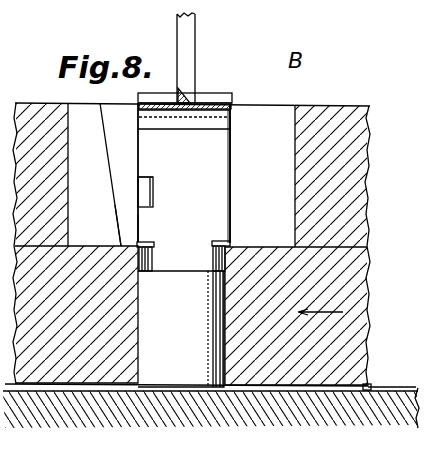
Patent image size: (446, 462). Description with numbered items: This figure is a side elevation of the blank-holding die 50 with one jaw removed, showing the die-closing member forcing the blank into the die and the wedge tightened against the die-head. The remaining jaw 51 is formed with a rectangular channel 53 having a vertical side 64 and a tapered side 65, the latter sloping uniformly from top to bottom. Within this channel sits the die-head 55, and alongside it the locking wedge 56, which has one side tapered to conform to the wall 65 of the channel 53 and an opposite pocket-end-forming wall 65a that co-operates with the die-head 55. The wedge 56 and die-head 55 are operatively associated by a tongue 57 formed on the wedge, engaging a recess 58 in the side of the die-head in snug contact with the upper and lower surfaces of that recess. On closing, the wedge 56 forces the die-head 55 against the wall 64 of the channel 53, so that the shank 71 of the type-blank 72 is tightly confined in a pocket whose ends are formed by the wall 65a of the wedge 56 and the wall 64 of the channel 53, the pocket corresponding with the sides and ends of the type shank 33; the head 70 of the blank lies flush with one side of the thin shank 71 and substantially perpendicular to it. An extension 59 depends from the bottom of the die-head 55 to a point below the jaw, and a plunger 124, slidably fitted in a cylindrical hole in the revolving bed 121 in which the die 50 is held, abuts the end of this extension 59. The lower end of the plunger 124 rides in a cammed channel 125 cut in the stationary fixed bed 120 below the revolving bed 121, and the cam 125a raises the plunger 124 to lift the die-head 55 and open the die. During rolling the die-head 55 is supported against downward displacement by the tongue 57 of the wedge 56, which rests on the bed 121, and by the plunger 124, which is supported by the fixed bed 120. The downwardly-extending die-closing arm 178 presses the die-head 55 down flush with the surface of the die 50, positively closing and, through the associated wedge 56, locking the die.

The blank-holding die 50 is at (303, 99).
The jaw 51 is at (191, 175).
The bed of the rolling press 121 is at (363, 293).
The locking wedge 56 is at (115, 174).
The tapered side of channel 65 is at (116, 212).
The type shank 33 is at (206, 137).
The rectangular channel 53 is at (232, 166).
The vertical side of channel 64 is at (232, 207).
The die-head 55 is at (184, 186).
The tongue 57 is at (145, 178).
The recess 58 is at (151, 192).
The pocket-end-forming wall of wedge 65a is at (139, 223).
The extension 59 is at (183, 256).
The plunger 124 is at (181, 329).
The cammed channel 125 is at (292, 390).
The cam 125a is at (369, 386).
The fixed bed 120 is at (97, 407).
The type-blank 72 is at (213, 84).
The head 70 is at (229, 98).
The shank 71 is at (184, 123).
The arm 178 is at (204, 42).